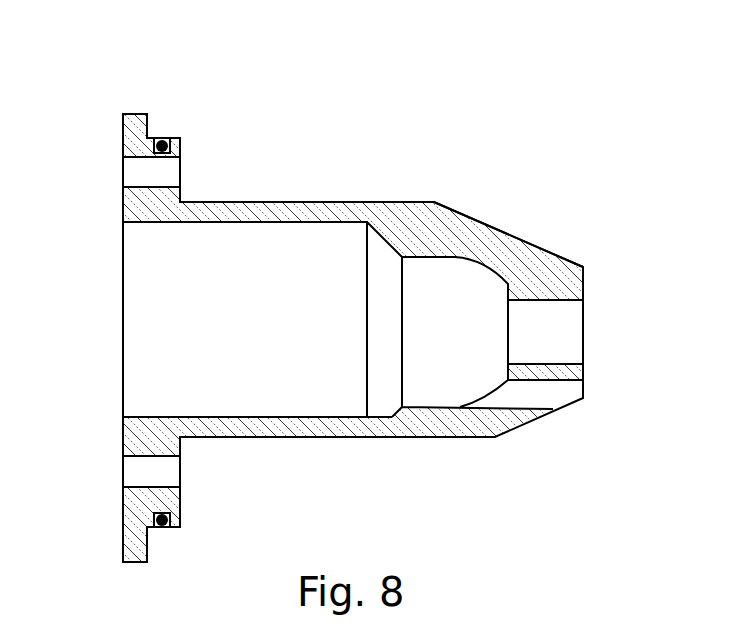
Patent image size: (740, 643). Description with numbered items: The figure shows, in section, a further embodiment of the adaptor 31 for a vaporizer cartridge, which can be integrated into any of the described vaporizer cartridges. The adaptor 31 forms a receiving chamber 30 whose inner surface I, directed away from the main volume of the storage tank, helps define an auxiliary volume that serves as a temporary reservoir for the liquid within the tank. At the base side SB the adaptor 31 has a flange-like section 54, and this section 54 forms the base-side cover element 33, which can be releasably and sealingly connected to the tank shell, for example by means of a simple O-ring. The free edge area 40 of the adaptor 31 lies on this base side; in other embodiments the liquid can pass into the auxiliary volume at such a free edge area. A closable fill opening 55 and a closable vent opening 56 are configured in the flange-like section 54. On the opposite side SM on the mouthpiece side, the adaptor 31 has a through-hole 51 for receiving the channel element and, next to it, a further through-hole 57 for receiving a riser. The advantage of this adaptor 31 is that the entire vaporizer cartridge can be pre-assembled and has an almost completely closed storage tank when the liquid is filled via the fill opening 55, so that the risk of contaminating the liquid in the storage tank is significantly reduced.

The receiving chamber 30 is at (273, 393).
The adaptor 31 is at (524, 212).
The cover element 33 is at (120, 152).
The free edge area 40 is at (121, 418).
The through-hole 51 is at (572, 332).
The flange-like section 54 is at (119, 117).
The fill opening 55 is at (135, 480).
The vent opening 56 is at (137, 176).
The through-hole 57 is at (553, 395).
The inner surface I is at (302, 226).
The side on the base side SB is at (110, 294).
The side on the mouthpiece side SM is at (603, 278).